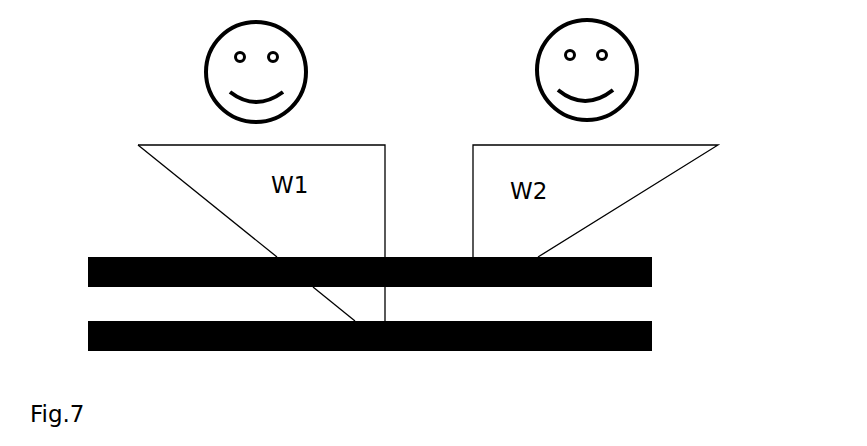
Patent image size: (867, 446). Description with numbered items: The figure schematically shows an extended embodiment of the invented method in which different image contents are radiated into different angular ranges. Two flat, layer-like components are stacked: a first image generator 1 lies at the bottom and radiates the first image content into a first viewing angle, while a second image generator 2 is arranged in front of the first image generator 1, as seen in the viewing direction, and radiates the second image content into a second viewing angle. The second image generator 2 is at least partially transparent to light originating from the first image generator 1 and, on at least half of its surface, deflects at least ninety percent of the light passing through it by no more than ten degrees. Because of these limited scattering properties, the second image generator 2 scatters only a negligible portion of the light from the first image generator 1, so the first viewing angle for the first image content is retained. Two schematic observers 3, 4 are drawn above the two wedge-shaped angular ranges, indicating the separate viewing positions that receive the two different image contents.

The first image generator 1 is at (672, 339).
The second image generator 2 is at (665, 273).
The first viewer 3 is at (328, 67).
The second viewer 4 is at (649, 72).